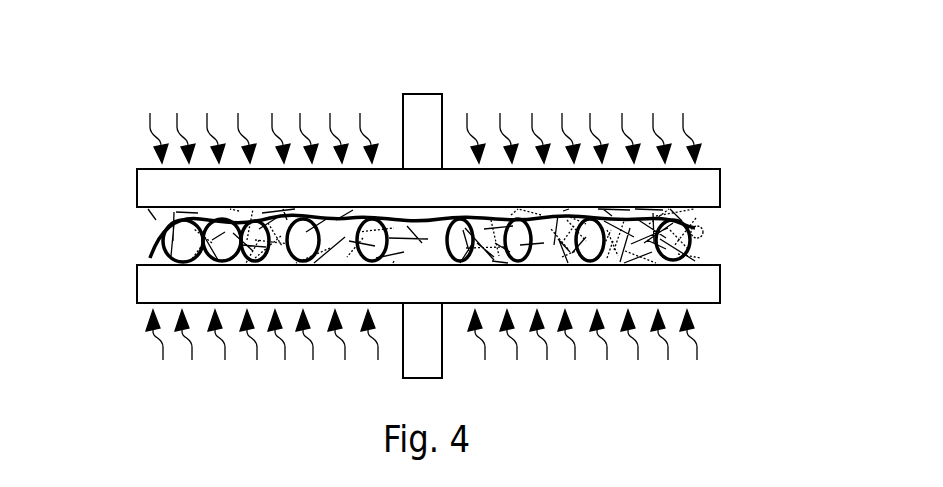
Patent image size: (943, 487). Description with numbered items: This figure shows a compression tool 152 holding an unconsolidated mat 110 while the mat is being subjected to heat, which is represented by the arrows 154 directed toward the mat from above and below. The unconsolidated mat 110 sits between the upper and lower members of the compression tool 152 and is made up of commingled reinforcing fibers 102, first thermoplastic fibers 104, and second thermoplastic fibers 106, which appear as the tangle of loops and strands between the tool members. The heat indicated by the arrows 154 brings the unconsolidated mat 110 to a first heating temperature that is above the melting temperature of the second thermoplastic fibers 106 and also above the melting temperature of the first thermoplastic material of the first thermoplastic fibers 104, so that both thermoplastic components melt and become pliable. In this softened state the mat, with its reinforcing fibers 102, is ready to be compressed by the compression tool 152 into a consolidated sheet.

The reinforcing fibers 102 is at (700, 213).
The first thermoplastic fibers 104 is at (703, 230).
The second thermoplastic fibers 106 is at (178, 210).
The unconsolidated mat 110 is at (422, 189).
The compression tool 152 is at (427, 108).
The arrows 154 is at (690, 140).